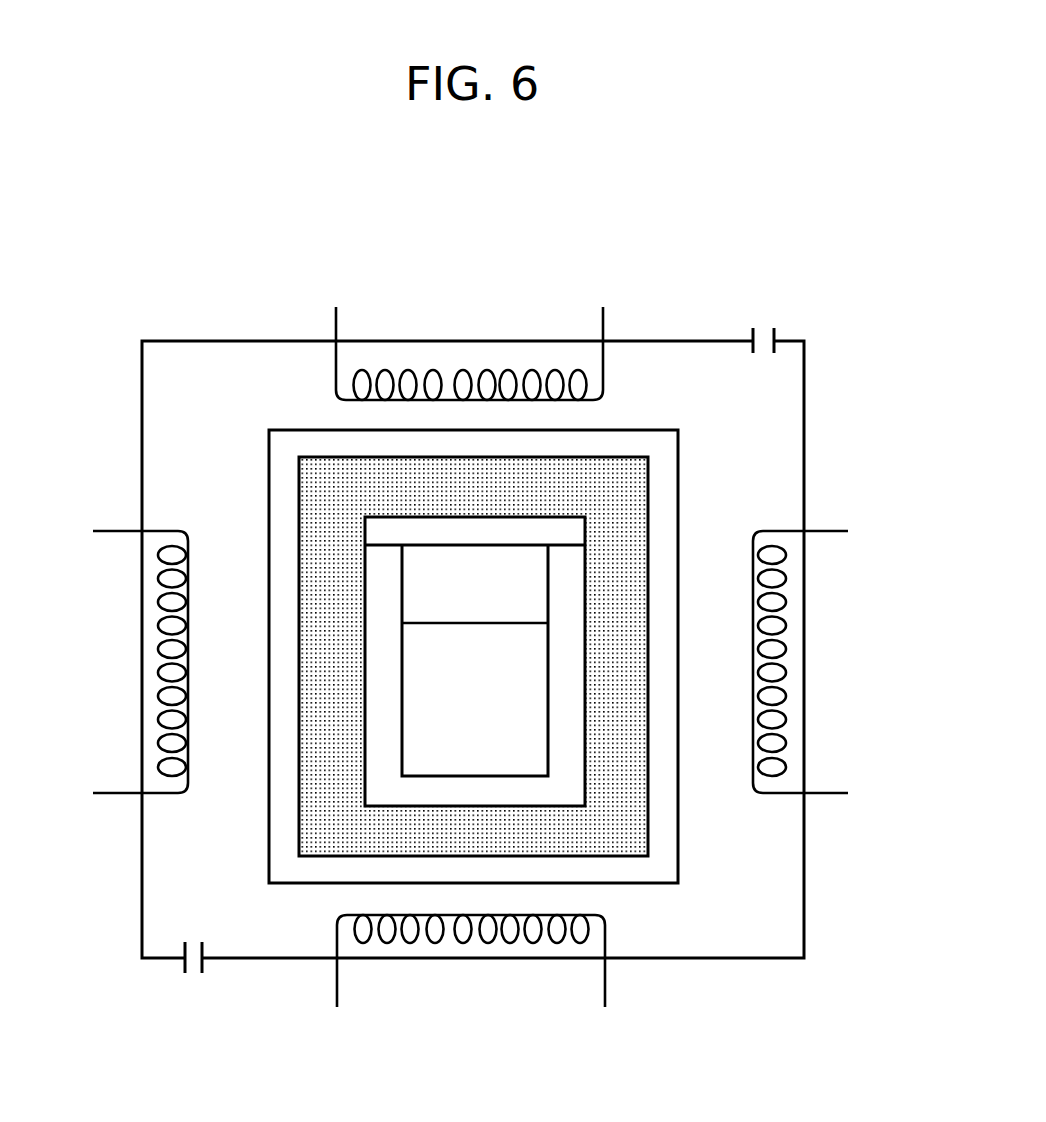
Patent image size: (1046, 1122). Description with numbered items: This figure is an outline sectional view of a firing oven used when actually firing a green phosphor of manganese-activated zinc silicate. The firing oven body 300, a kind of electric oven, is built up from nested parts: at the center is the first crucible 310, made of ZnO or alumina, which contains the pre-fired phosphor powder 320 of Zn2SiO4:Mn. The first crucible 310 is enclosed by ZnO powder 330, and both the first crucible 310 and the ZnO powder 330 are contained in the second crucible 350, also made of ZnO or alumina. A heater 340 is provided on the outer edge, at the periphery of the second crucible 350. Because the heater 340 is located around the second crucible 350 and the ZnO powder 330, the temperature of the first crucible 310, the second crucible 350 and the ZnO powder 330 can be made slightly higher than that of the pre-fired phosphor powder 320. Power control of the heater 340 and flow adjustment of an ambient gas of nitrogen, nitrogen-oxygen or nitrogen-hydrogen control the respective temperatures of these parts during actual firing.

The firing oven body 300 is at (804, 860).
The first crucible 310 is at (560, 528).
The pre-fired phosphor powder 320 is at (430, 738).
The ZnO powder 330 is at (313, 512).
The heater 340 is at (433, 372).
The second crucible 350 is at (667, 507).